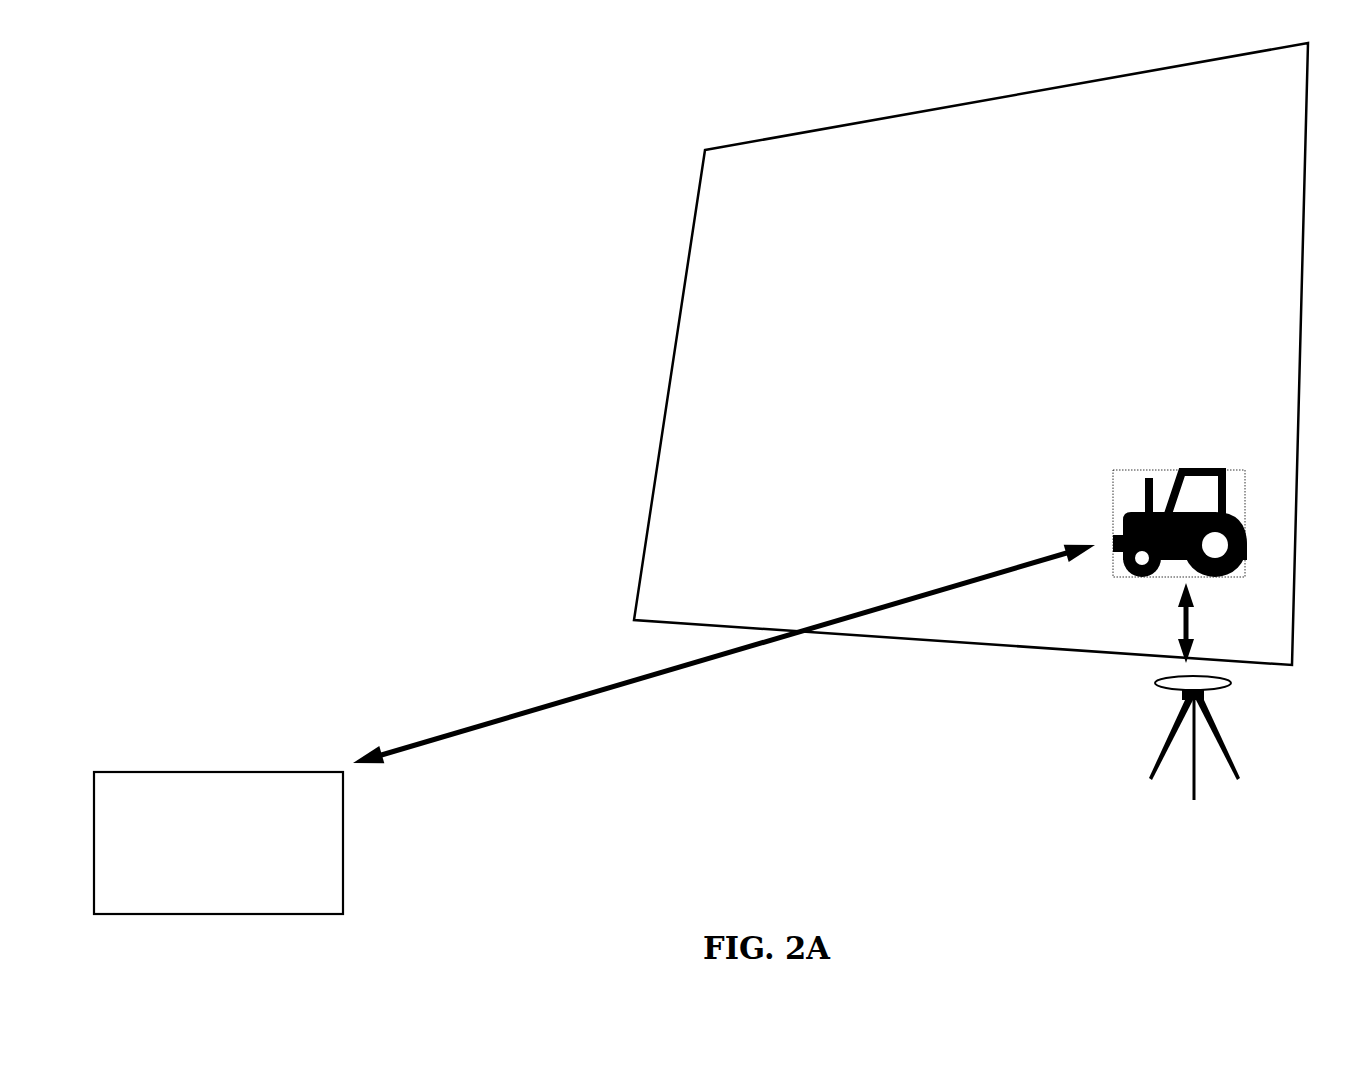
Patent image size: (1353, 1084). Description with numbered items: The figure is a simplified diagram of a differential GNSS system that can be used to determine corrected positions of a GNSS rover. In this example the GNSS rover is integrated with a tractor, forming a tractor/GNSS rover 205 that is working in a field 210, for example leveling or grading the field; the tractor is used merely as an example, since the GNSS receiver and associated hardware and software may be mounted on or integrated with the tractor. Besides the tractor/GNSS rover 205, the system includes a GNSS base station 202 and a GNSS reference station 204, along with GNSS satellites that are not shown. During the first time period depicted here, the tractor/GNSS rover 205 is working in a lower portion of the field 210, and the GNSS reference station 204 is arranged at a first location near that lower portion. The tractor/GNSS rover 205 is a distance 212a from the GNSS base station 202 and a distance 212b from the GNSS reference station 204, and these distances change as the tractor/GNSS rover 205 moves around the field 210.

The GNSS base station 202 is at (162, 772).
The GNSS reference station 204 is at (1170, 727).
The tractor/GNSS rover 205 is at (1125, 512).
The field 210 is at (676, 338).
The distance 212a is at (630, 686).
The distance 212b is at (1181, 615).